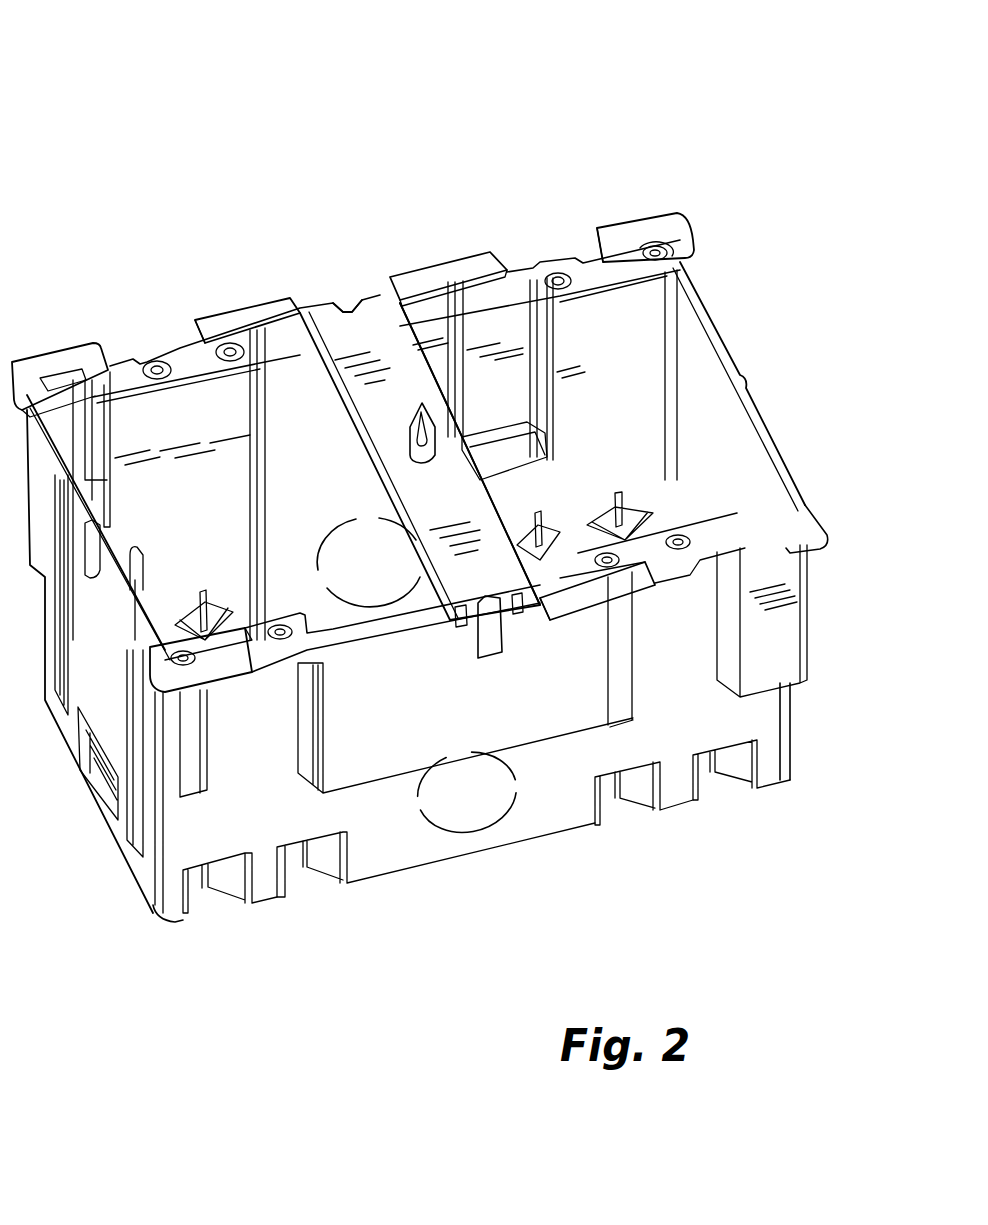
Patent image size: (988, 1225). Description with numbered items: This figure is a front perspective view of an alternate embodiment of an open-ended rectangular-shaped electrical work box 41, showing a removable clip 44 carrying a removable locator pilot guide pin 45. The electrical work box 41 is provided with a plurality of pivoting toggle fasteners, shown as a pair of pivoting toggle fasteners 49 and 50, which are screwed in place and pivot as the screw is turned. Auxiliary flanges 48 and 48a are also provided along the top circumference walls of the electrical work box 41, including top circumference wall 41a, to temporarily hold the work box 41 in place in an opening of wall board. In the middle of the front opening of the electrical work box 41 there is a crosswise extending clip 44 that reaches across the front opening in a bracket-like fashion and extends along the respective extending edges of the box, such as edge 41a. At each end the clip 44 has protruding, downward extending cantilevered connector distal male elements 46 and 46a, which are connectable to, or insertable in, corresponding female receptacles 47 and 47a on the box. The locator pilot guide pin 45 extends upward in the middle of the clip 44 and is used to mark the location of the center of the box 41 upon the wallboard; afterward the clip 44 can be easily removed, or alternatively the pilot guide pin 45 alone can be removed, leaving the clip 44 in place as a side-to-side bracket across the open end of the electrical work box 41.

The electrical work box 41 is at (86, 158).
The top circumference wall 41a is at (718, 327).
The clip 44 is at (445, 472).
The locator pilot guide pin 45 is at (410, 443).
The cantilevered connector distal male element 46 is at (457, 590).
The cantilevered connector distal male element 46a is at (317, 312).
The female receptacle 47 is at (488, 632).
The female receptacle 47a is at (344, 288).
The auxiliary flange 48 is at (212, 320).
The auxiliary flange 48a is at (584, 572).
The pivoting toggle fastener 49 is at (212, 663).
The pivoting toggle fastener 50 is at (623, 236).